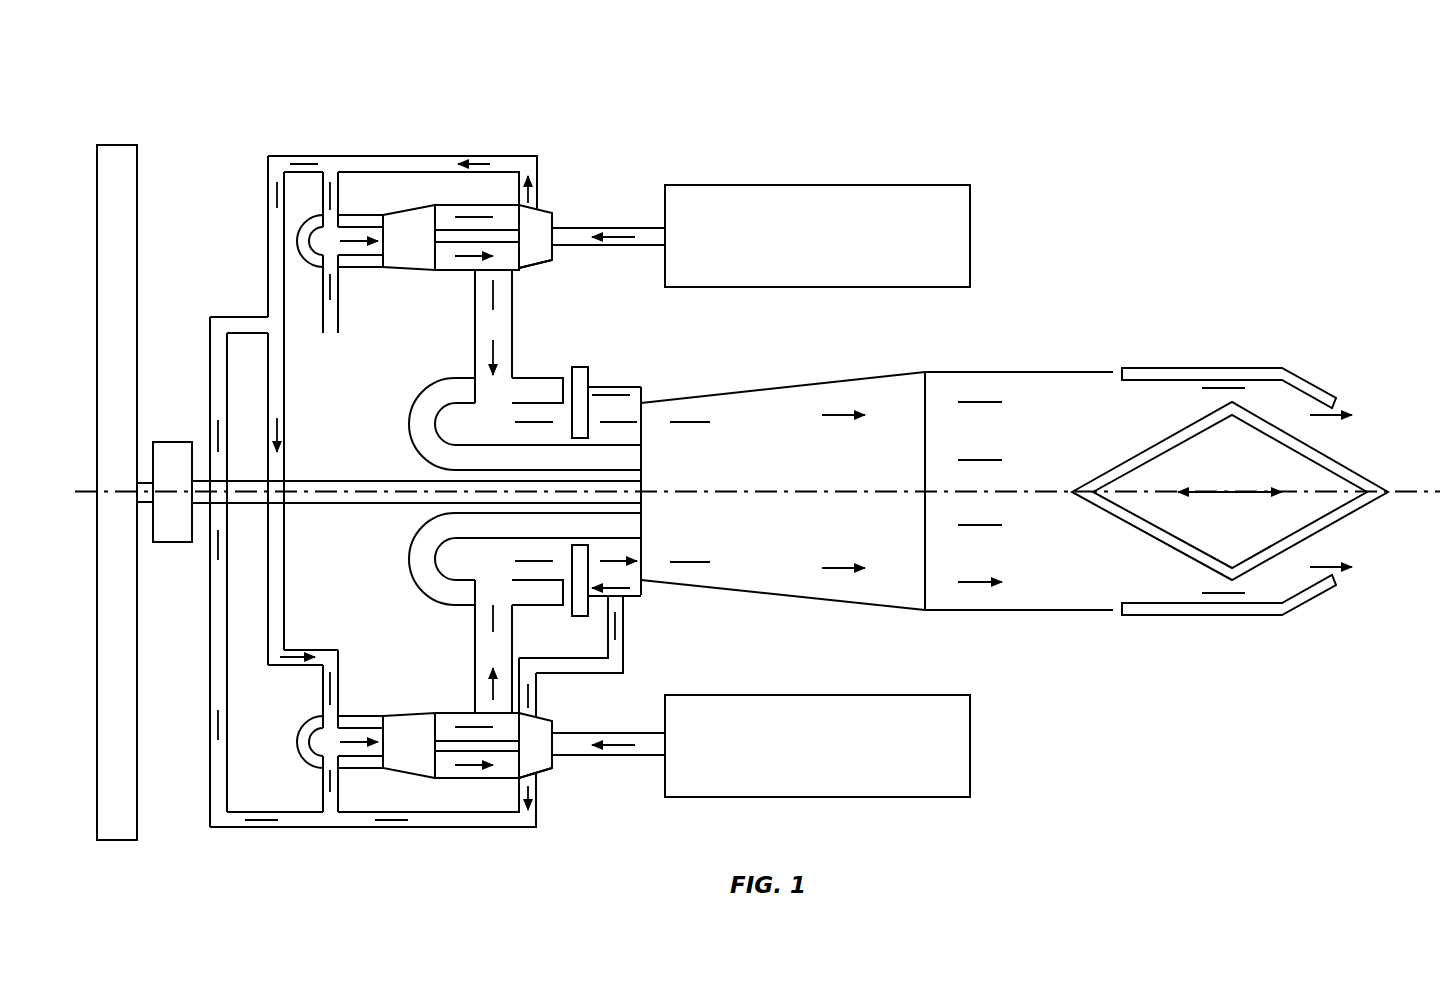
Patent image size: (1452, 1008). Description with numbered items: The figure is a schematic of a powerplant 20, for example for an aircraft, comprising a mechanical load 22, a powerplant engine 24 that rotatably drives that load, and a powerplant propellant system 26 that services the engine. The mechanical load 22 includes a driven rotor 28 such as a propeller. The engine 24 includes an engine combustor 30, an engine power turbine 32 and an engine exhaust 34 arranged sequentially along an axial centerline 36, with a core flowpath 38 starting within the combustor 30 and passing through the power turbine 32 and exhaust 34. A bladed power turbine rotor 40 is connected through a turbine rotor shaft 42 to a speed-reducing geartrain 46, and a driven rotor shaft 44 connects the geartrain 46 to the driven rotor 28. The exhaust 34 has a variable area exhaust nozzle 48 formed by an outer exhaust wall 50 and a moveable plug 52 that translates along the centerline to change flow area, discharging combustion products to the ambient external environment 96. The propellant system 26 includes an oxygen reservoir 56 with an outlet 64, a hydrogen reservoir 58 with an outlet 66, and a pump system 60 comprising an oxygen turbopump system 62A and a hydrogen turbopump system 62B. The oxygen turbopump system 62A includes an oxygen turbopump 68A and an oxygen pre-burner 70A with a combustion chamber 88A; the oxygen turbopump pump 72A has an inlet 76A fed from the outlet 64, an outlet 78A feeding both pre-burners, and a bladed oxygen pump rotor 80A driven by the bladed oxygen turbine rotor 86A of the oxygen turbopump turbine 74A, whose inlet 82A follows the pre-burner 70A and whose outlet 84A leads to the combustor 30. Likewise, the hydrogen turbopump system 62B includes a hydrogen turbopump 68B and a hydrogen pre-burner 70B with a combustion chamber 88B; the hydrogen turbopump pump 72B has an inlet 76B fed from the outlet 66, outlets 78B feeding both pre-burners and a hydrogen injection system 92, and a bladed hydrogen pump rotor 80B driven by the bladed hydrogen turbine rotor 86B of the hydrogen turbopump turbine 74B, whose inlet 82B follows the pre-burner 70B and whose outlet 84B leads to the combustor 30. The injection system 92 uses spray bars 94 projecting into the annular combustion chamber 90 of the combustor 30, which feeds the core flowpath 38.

The powerplant 20 is at (1030, 384).
The mechanical load 22 is at (128, 439).
The powerplant engine 24 is at (1019, 445).
The powerplant propellant system 26 is at (832, 178).
The driven rotor 28 is at (97, 178).
The engine combustor 30 is at (403, 404).
The engine power turbine 32 is at (815, 378).
The engine exhaust 34 is at (1162, 353).
The axial centerline 36 is at (1412, 500).
The core flowpath 38 is at (1028, 441).
The bladed power turbine rotor 40 is at (795, 598).
The turbine rotor shaft 42 is at (325, 504).
The driven rotor shaft 44 is at (147, 504).
The geartrain 46 is at (172, 543).
The variable area exhaust nozzle 48 is at (1280, 366).
The outer exhaust wall 50 is at (1238, 618).
The moveable plug 52 is at (1343, 520).
The oxygen reservoir 56 is at (945, 182).
The hydrogen reservoir 58 is at (945, 805).
The pump system 60 is at (432, 100).
The oxygen turbopump system 62A is at (553, 173).
The hydrogen turbopump system 62B is at (560, 798).
The outlet 64 is at (657, 248).
The outlet 66 is at (657, 757).
The oxygen turbopump 68A is at (460, 297).
The hydrogen turbopump 68B is at (432, 698).
The oxygen pre-burner 70A is at (357, 274).
The hydrogen pre-burner 70B is at (355, 713).
The oxygen turbopump pump 72A is at (534, 272).
The hydrogen turbopump pump 72B is at (559, 772).
The oxygen turbopump turbine 74A is at (400, 204).
The hydrogen turbopump turbine 74B is at (413, 780).
The inlet 76A is at (553, 247).
The inlet 76B is at (553, 735).
The outlet 78A is at (542, 203).
The outlets 78B is at (545, 714).
The bladed oxygen pump rotor 80A is at (545, 264).
The bladed hydrogen pump rotor 80B is at (553, 769).
The inlet 82A is at (372, 213).
The inlet 82B is at (373, 722).
The outlet 84A is at (448, 271).
The outlet 84B is at (438, 777).
The bladed oxygen turbine rotor 86A is at (428, 207).
The bladed hydrogen turbine rotor 86B is at (392, 769).
The combustion chamber 88A is at (309, 229).
The combustion chamber 88B is at (298, 732).
The combustion chamber 90 is at (478, 432).
The hydrogen injection system 92 is at (641, 612).
The spray bars 94 is at (574, 369).
The ambient external environment 96 is at (1395, 423).